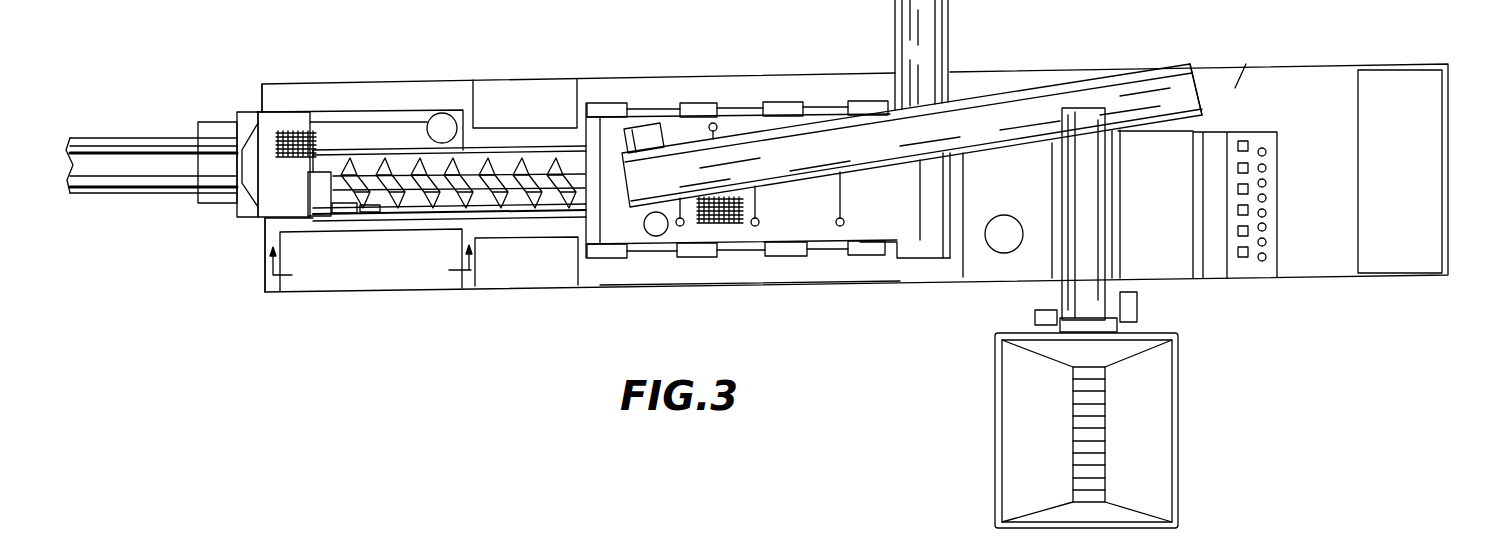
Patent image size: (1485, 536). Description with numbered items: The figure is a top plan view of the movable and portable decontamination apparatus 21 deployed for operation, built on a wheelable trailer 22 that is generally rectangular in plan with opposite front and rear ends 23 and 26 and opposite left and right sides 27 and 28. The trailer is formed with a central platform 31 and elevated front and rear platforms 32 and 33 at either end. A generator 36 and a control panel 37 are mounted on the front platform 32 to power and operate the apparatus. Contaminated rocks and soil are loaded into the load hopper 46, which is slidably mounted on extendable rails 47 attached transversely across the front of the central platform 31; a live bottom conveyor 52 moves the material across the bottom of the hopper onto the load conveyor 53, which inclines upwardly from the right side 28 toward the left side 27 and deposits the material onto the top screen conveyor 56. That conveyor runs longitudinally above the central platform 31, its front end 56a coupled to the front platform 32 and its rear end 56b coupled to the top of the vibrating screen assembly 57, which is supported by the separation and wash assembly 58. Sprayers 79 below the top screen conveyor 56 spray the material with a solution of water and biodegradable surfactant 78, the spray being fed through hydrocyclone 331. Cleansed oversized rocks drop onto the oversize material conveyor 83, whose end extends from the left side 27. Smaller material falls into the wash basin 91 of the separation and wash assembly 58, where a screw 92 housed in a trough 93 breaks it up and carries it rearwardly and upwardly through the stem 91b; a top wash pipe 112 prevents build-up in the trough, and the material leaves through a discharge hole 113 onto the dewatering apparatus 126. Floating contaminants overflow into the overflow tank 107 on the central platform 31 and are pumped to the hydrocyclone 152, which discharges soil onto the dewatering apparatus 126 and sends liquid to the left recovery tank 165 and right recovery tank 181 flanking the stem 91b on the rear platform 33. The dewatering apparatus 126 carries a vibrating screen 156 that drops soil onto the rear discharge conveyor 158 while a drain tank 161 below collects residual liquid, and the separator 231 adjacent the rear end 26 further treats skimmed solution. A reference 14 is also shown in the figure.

The decontamination apparatus 21 is at (1382, 44).
The trailer 22 is at (1312, 60).
The front end 23 is at (1448, 258).
The rear end 26 is at (263, 252).
The first or left side 27 is at (400, 82).
The second or right side 28 is at (753, 286).
The central platform 31 is at (807, 85).
The front platform 32 is at (1246, 64).
The rear platform 33 is at (274, 222).
The generator 36 is at (1423, 192).
The control panel 37 is at (1249, 268).
The load hopper 46 is at (1181, 494).
The extendable rails 47 is at (1050, 296).
The live bottom conveyor 52 is at (1092, 328).
The load conveyor 53 is at (1097, 200).
The top screen conveyor 56 is at (1031, 93).
The front end 56a is at (1188, 60).
The rear end 56b is at (672, 162).
The vibrating screen assembly 57 is at (731, 100).
The separation and wash assembly 58 is at (558, 138).
The biodegradable surfactant or emulsifier 78 is at (993, 248).
The sprayers 79 is at (757, 206).
The oversize material conveyor 83 is at (948, 18).
The wash basin 91 is at (519, 229).
The stem 91b is at (388, 216).
The screw 92 is at (486, 192).
The trough 93 is at (505, 158).
The overflow tank 107 is at (922, 268).
The top wash pipe 112 is at (380, 214).
The discharge hole 113 is at (348, 214).
The dewatering apparatus 126 is at (350, 109).
The hydrocyclone 152 is at (441, 124).
The vibrating screen 156 is at (280, 130).
The rear discharge conveyor 158 is at (140, 193).
The drain tank 161 is at (277, 98).
The left recovery tank 165 is at (540, 117).
The right recovery tank 181 is at (552, 268).
The separator 231 is at (378, 269).
The hydrocyclone 331 is at (658, 231).
The box 14 is at (371, 260).